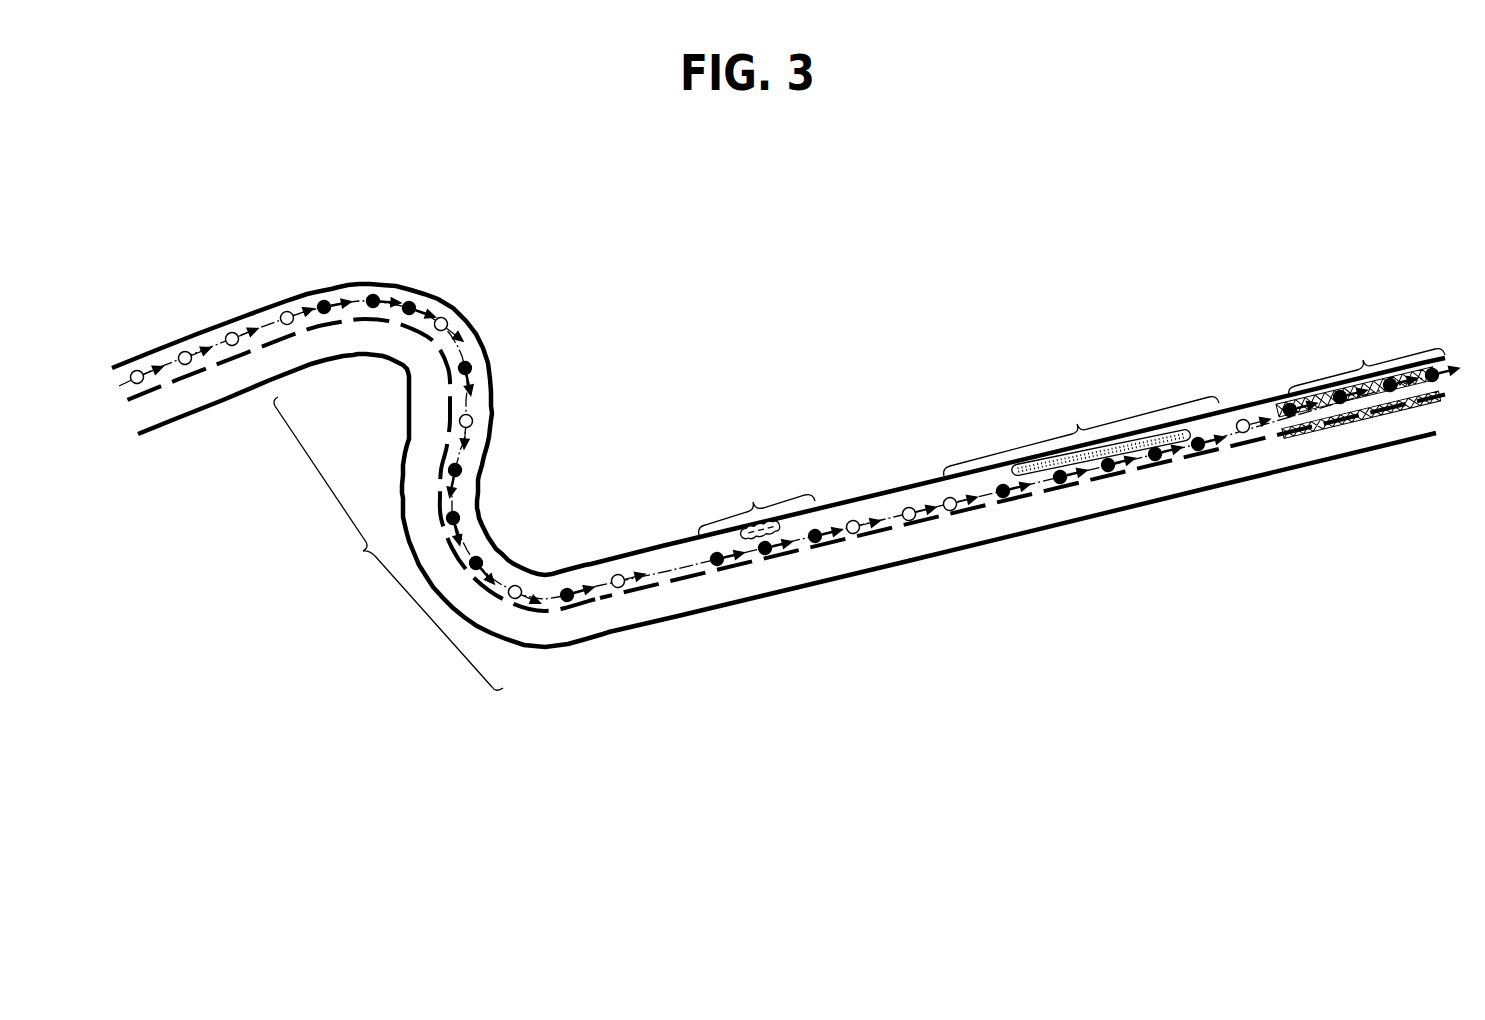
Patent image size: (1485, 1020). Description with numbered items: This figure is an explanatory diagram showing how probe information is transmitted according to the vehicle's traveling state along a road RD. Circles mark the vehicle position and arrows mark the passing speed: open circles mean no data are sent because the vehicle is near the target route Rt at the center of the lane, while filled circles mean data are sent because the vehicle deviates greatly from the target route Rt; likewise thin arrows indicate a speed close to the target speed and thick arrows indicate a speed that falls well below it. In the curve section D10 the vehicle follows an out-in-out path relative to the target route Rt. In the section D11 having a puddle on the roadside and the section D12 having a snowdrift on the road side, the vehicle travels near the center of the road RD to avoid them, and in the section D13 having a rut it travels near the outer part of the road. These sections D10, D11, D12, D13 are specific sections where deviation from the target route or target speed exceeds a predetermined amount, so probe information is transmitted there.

The road RD is at (471, 333).
The target route Rt is at (666, 566).
The curve section D10 is at (388, 543).
The section having a puddle D11 is at (757, 497).
The section having a snowdrift D12 is at (1081, 426).
The section having a rut D13 is at (1360, 375).